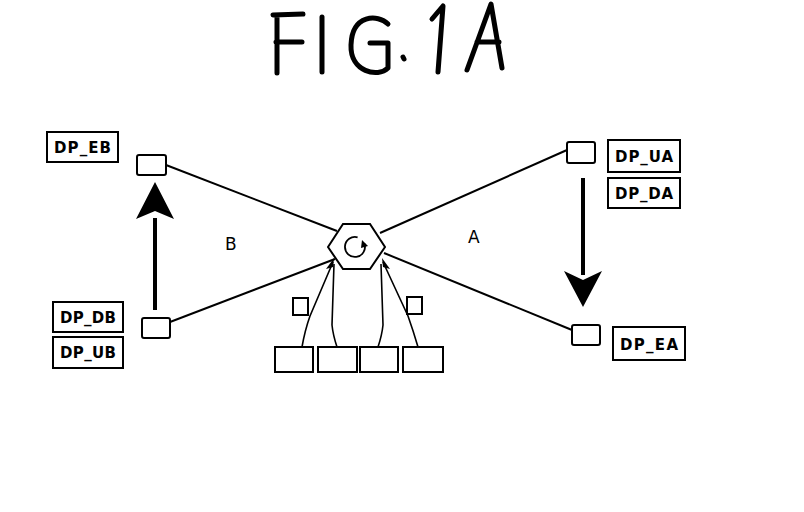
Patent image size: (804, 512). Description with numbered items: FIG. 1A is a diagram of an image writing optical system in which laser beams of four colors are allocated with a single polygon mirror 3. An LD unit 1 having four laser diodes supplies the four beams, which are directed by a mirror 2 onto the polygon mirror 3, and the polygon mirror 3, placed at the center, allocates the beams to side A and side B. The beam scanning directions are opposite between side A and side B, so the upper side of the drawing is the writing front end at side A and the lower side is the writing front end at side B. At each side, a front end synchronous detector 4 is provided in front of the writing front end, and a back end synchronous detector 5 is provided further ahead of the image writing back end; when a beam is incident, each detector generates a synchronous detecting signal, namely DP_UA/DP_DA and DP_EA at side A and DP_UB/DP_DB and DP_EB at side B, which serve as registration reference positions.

The LD unit 1 is at (300, 372).
The mirror 2 is at (293, 304).
The polygon mirror 3 is at (358, 224).
The front end synchronous detector 4 is at (157, 338).
The back end synchronous detector 5 is at (152, 155).